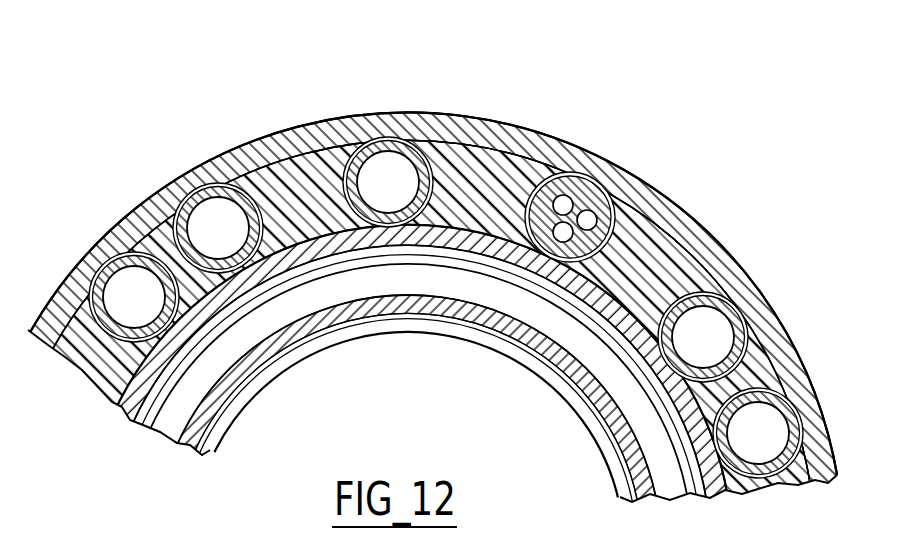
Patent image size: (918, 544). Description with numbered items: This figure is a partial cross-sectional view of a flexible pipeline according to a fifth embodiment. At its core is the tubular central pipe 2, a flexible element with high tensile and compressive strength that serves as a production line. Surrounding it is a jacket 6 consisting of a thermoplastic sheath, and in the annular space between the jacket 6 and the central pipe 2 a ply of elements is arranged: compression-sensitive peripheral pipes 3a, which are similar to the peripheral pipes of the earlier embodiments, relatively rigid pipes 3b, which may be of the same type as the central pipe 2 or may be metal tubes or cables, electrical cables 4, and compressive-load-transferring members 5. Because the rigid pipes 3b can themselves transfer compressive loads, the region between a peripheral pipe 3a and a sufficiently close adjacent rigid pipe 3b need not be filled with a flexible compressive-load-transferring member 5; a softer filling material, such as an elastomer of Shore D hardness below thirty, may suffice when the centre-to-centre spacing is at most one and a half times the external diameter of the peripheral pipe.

The tubular central pipe 2 is at (321, 242).
The compression-sensitive peripheral pipes 3a is at (210, 220).
The relatively rigid pipes 3b is at (93, 263).
The electrical cables 4 is at (557, 258).
The compressive-load-transferring members 5 is at (295, 183).
The jacket 6 is at (31, 344).